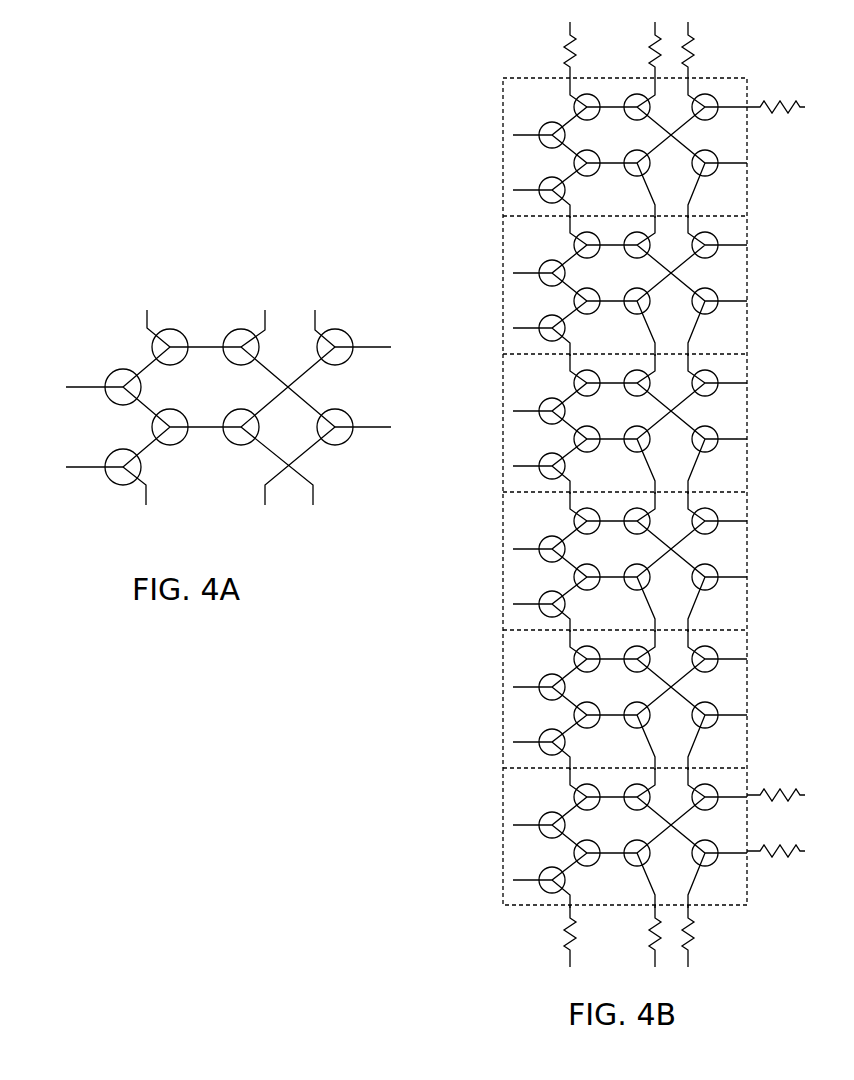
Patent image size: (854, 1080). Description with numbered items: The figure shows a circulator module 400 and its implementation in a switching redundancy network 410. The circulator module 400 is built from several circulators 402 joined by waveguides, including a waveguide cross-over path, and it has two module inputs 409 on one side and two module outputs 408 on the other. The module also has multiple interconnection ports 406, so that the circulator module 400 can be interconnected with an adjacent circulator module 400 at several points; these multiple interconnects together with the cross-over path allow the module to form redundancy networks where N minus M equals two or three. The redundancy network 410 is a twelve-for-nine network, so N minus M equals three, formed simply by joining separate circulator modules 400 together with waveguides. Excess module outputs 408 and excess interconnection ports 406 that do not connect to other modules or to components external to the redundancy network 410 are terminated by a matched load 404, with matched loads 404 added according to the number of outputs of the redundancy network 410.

In FIG. 4A, the circulator module 400 is at (272, 233).
In FIG. 4B, the circulator module 400 is at (503, 150).
In FIG. 4A, the circulator 402 is at (104, 372).
In FIG. 4B, the matched load 404 is at (562, 58).
In FIG. 4A, the interconnection port 406 is at (145, 318).
In FIG. 4A, the module output 408 is at (371, 343).
In FIG. 4A, the module input 409 is at (85, 390).
In FIG. 4B, the redundancy network 410 is at (425, 101).